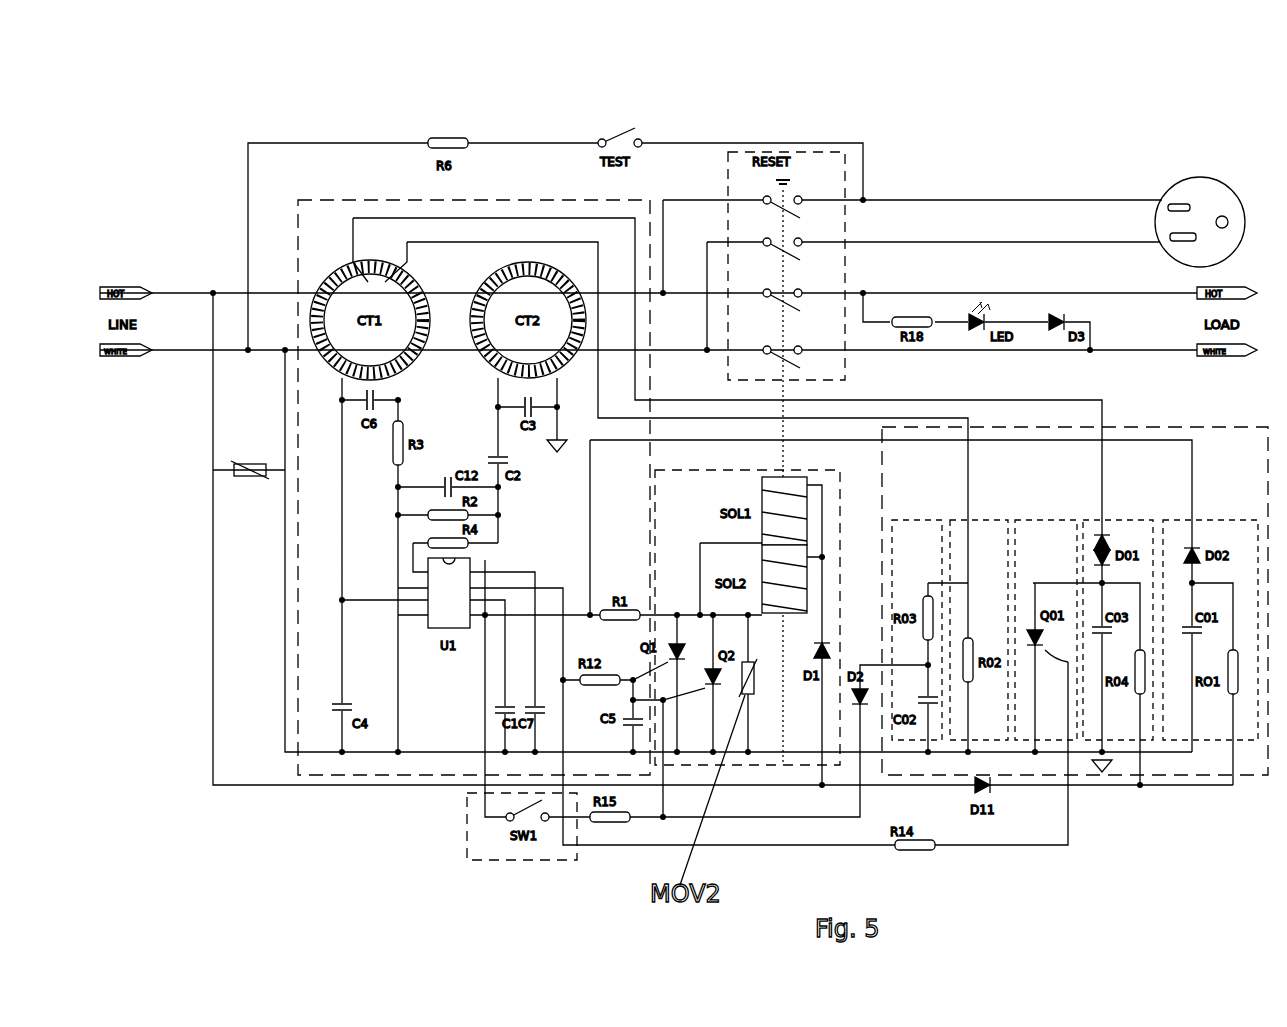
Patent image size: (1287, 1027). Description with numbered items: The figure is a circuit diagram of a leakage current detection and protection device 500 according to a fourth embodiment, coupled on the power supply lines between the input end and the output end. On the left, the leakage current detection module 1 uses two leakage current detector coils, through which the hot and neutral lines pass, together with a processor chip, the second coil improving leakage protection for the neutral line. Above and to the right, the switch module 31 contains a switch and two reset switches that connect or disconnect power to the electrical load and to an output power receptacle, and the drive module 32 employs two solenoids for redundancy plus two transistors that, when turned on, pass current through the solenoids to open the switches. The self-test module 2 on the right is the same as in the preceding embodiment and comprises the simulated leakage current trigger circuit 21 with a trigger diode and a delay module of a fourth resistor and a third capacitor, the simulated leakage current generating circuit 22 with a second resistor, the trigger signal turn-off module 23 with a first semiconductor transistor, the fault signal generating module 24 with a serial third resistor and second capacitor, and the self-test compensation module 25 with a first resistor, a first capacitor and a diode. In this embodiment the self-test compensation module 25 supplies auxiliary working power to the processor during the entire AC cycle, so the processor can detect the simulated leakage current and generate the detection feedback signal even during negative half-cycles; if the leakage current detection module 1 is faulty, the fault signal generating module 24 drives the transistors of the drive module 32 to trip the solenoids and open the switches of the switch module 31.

The leakage current detection and protection device 500 is at (1147, 49).
The leakage current detection module 1 is at (530, 200).
The self-test module 2 is at (1228, 425).
The switch module 31 is at (830, 152).
The drive module 32 is at (840, 575).
The simulated leakage current trigger circuit 21 is at (1118, 520).
The simulated leakage current generating circuit 22 is at (985, 520).
The trigger signal turn-off module 23 is at (1045, 520).
The fault signal generating module 24 is at (915, 520).
The self-test compensation module 25 is at (1213, 520).